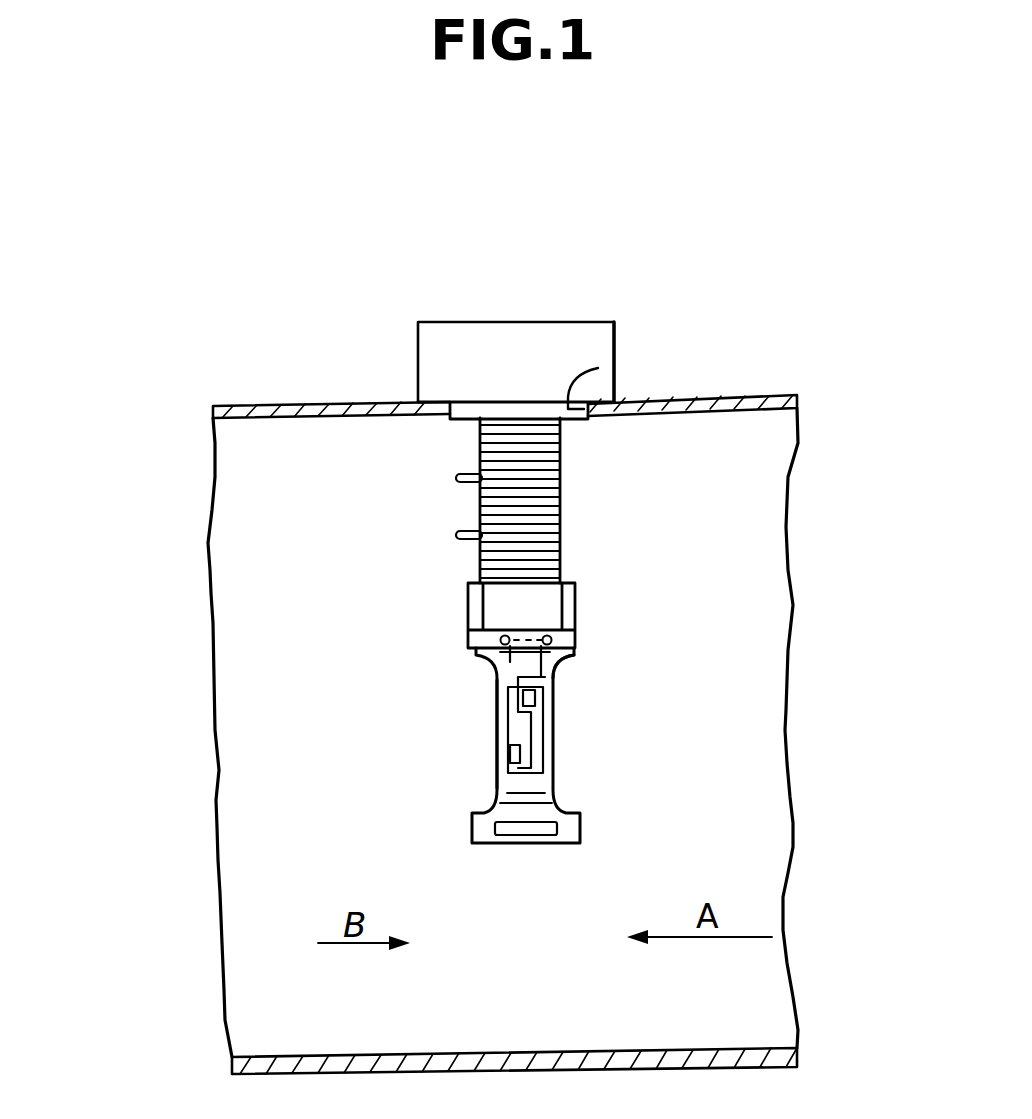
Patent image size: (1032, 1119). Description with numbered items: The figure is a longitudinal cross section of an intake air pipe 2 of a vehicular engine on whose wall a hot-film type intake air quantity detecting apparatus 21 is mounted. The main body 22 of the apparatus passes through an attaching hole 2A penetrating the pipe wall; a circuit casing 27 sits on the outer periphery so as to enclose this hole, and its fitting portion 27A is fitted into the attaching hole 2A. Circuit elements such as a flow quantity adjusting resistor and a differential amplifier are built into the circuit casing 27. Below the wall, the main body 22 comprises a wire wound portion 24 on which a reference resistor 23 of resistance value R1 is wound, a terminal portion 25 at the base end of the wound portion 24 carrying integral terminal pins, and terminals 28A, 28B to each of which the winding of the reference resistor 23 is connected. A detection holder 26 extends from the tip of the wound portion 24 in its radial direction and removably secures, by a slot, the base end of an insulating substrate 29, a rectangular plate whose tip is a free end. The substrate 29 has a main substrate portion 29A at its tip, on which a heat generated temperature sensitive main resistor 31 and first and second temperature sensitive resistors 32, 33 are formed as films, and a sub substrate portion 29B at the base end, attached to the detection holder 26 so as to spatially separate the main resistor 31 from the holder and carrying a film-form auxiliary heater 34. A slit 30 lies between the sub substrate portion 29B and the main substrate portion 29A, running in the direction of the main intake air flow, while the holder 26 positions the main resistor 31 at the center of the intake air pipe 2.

The intake air pipe 2 is at (757, 398).
The attaching hole 2A is at (598, 368).
The hot-film type intake air quantity detecting apparatus 21 is at (622, 297).
The main body 22 is at (575, 608).
The reference resistor 23 is at (560, 510).
The wire wound portion 24 is at (480, 567).
The terminal portion 25 is at (480, 432).
The detection holder 26 is at (500, 792).
The circuit casing 27 is at (515, 328).
The fitting portion 27A is at (465, 403).
The terminal 28A is at (457, 478).
The terminal 28B is at (457, 535).
The insulating substrate 29 is at (556, 771).
The main substrate portion 29A is at (500, 715).
The sub substrate portion 29B is at (565, 665).
The slit 30 is at (545, 677).
The heat generated temperature sensitive main resistor 31 is at (532, 732).
The first temperature sensitive resistor 32 is at (536, 695).
The second temperature sensitive resistor 33 is at (500, 758).
The auxiliary heater 34 is at (497, 673).